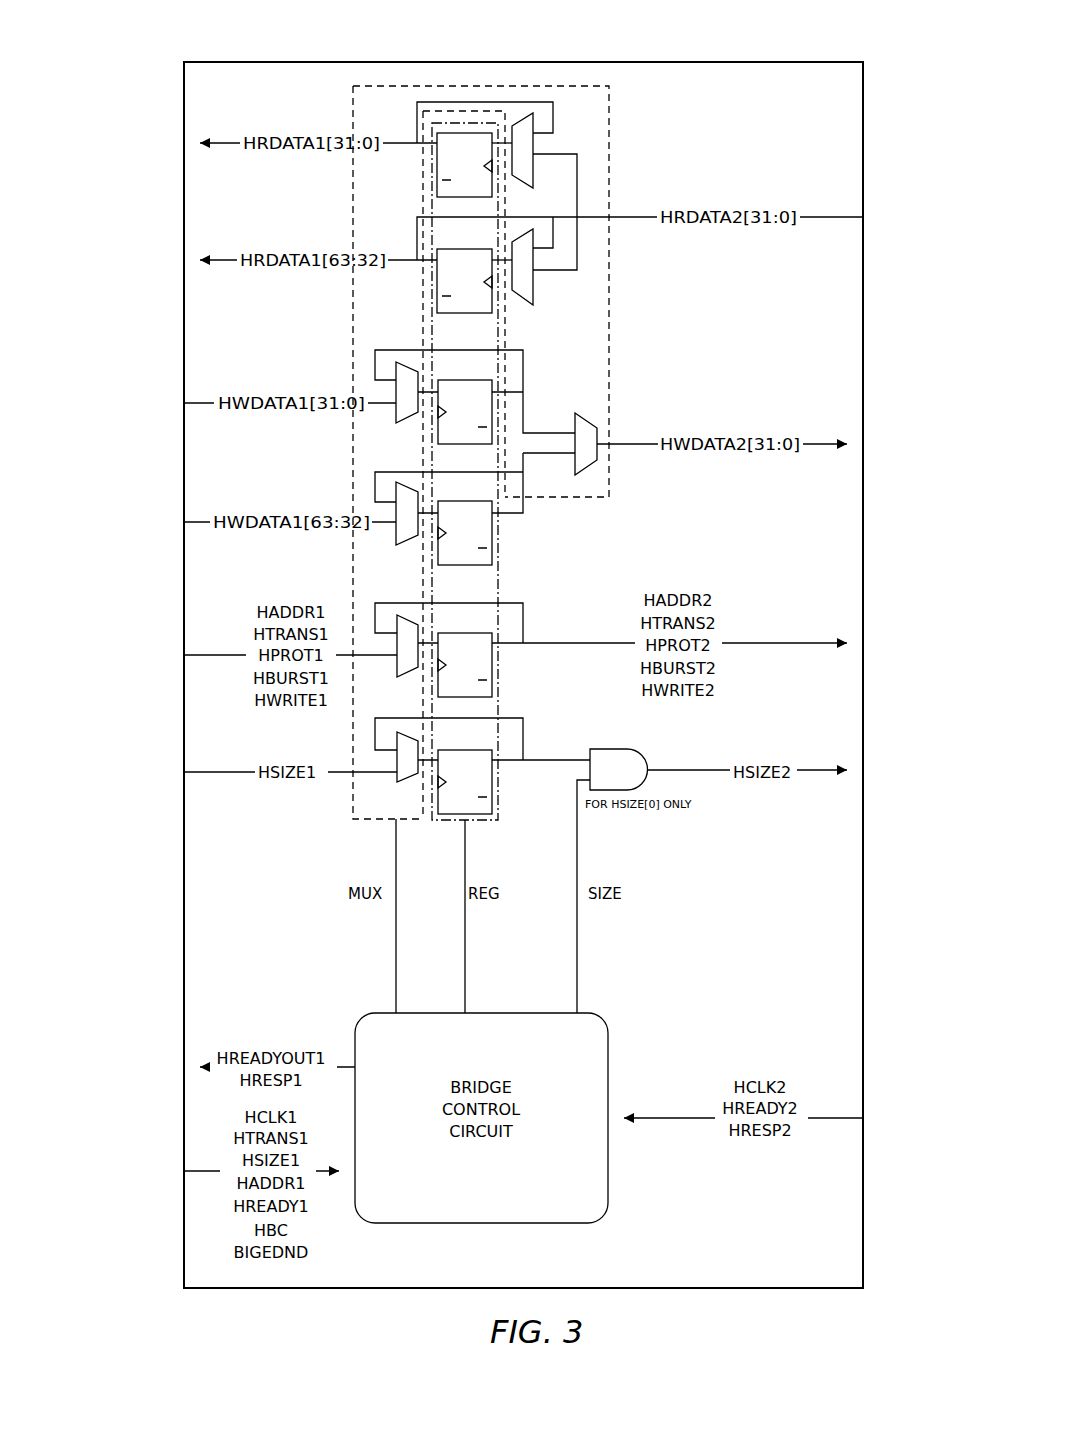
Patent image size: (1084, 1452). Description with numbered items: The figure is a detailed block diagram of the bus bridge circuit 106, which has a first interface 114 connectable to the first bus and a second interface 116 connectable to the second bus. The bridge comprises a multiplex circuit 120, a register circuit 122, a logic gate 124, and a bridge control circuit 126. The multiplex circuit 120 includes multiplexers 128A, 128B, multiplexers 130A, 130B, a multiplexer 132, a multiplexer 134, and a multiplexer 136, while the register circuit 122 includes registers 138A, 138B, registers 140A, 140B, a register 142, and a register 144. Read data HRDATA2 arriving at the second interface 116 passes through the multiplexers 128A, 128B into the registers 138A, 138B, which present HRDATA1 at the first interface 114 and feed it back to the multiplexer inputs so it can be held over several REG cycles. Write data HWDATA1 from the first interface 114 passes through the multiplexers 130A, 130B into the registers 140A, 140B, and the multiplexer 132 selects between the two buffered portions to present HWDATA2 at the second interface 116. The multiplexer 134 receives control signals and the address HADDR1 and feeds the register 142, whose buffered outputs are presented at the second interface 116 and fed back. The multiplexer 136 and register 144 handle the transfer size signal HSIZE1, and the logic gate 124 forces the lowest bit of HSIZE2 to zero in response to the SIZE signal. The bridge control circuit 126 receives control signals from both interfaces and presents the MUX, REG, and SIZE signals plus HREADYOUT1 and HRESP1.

The bus bridge circuit 106 is at (352, 68).
The first interface 114 is at (170, 104).
The second interface 116 is at (877, 108).
The multiplex circuit 120 is at (610, 121).
The register circuit 122 is at (505, 575).
The logic gate 124 is at (630, 748).
The bridge control circuit 126 is at (600, 1013).
The multiplexer 128A is at (523, 113).
The multiplexer 128B is at (514, 289).
The multiplexer 130A is at (408, 360).
The multiplexer 130B is at (408, 483).
The multiplexer 132 is at (597, 428).
The multiplexer 134 is at (408, 615).
The multiplexer 136 is at (400, 782).
The register 138A is at (437, 172).
The register 138B is at (448, 248).
The register 140A is at (477, 378).
The register 140B is at (492, 538).
The register 142 is at (492, 675).
The register 144 is at (492, 790).